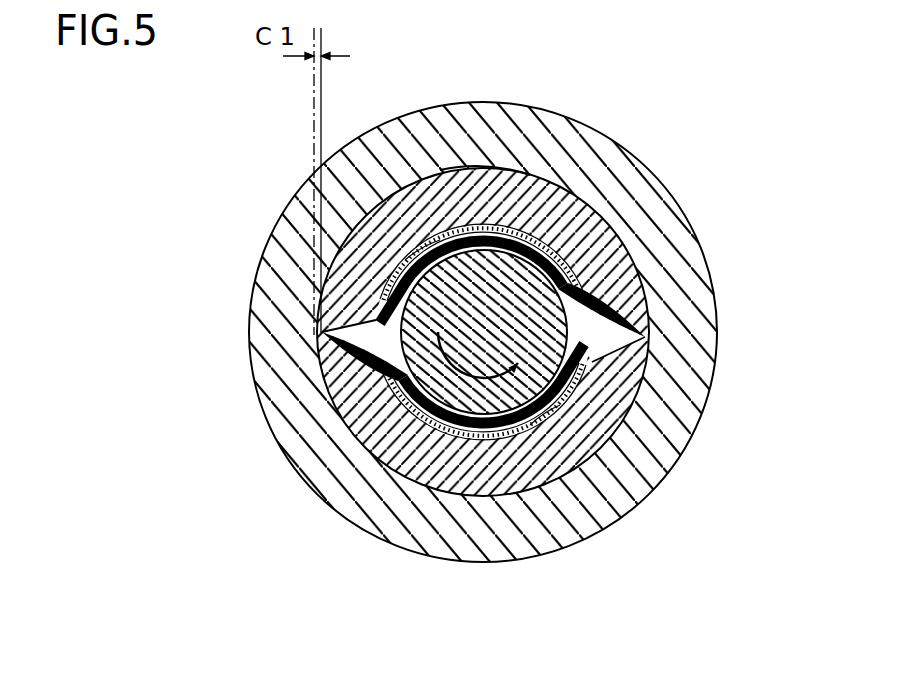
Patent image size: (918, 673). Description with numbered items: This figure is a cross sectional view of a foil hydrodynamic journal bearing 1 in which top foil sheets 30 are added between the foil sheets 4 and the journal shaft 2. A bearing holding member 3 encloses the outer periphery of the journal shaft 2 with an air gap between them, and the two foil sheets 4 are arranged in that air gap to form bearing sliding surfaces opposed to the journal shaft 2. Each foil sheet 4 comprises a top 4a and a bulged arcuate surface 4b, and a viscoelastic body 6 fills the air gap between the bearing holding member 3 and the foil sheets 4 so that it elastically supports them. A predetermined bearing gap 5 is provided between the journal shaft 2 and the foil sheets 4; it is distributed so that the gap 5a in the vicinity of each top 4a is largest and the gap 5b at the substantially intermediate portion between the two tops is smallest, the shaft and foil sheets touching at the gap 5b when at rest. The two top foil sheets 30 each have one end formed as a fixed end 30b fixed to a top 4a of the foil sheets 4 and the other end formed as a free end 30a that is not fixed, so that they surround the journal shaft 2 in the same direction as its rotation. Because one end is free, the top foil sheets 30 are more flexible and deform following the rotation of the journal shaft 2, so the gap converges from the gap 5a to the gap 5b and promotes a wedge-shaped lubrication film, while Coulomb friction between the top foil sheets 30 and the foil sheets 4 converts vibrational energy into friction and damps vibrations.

The foil hydrodynamic journal bearing 1 is at (566, 108).
The journal shaft 2 is at (448, 380).
The bearing holding member 3 is at (662, 228).
The top foil sheets 30 is at (570, 187).
The free ends 30a is at (318, 300).
The fixed ends 30b is at (332, 320).
The foil sheets 4 is at (395, 265).
The tops 4a is at (322, 332).
The bulged arcuate surfaces 4b is at (436, 243).
The bearing gap 5 is at (405, 287).
The gap in the vicinity of the top 5a is at (385, 383).
The smallest gap 5b is at (497, 425).
The viscoelastic body 6 is at (506, 170).